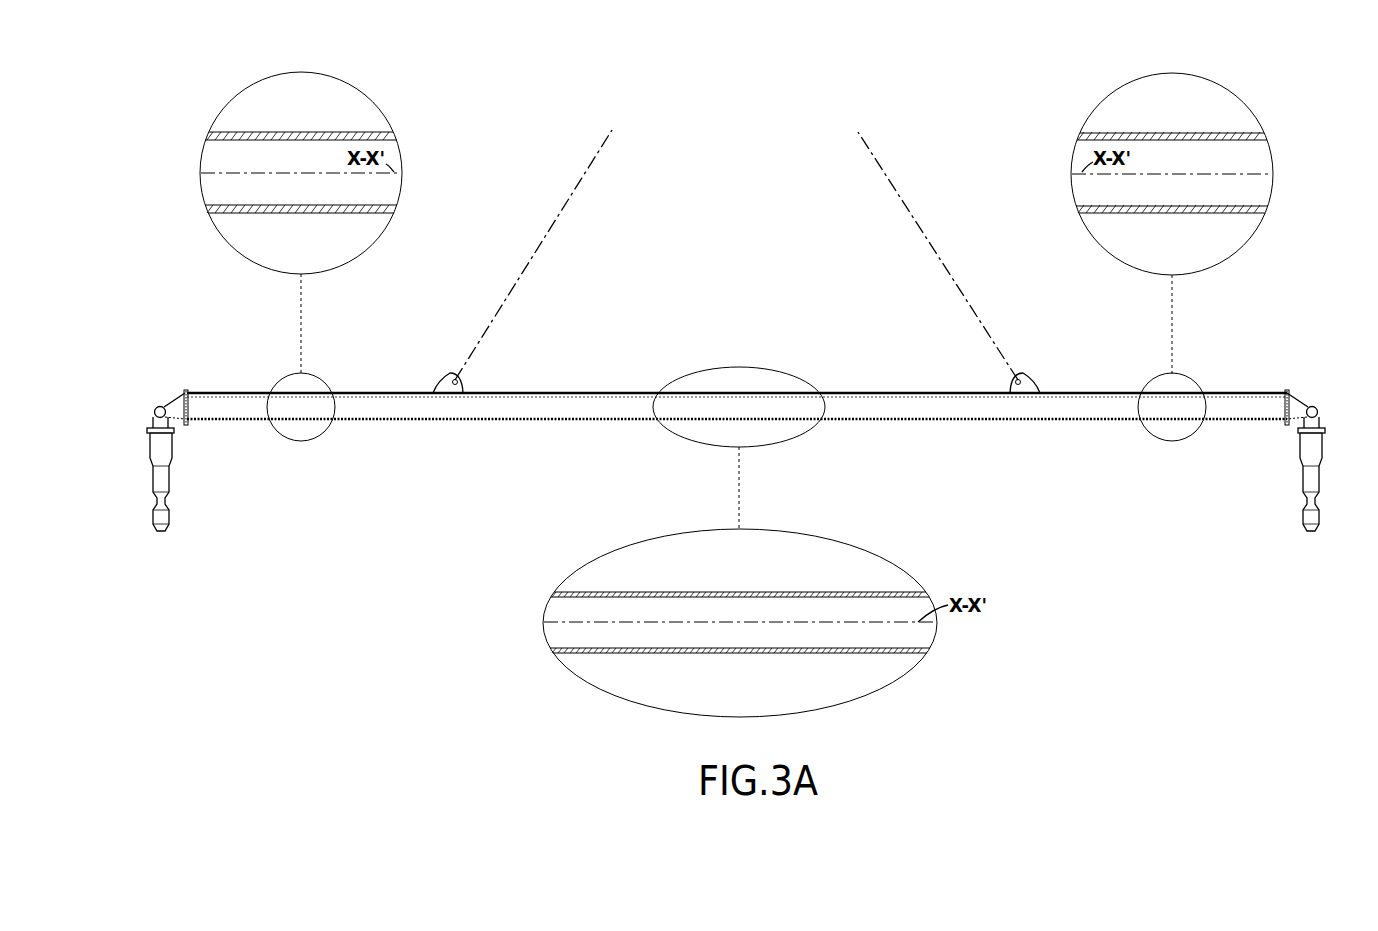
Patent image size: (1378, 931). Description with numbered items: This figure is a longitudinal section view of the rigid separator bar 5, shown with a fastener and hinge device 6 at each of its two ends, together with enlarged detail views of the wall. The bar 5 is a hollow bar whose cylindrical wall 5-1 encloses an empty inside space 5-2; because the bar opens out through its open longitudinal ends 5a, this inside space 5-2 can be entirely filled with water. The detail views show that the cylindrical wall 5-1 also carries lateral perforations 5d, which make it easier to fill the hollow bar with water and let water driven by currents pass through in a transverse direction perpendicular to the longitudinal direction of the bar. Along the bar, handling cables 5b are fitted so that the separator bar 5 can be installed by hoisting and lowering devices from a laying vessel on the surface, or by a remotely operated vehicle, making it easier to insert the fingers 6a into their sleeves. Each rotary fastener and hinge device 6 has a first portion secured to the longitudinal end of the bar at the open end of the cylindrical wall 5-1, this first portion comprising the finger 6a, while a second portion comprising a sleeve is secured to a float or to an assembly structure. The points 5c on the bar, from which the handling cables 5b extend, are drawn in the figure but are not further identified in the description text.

The rigid bar 5 is at (368, 131).
The cylindrical wall 5-1 is at (255, 132).
The empty inside space 5-2 is at (338, 195).
The lateral perforations 5d is at (298, 132).
The open longitudinal ends 5a is at (186, 390).
The handling cables 5b is at (905, 200).
The lifting lug 5c is at (1030, 375).
The fastener and hinge device 6 is at (737, 446).
The finger 6a is at (170, 450).